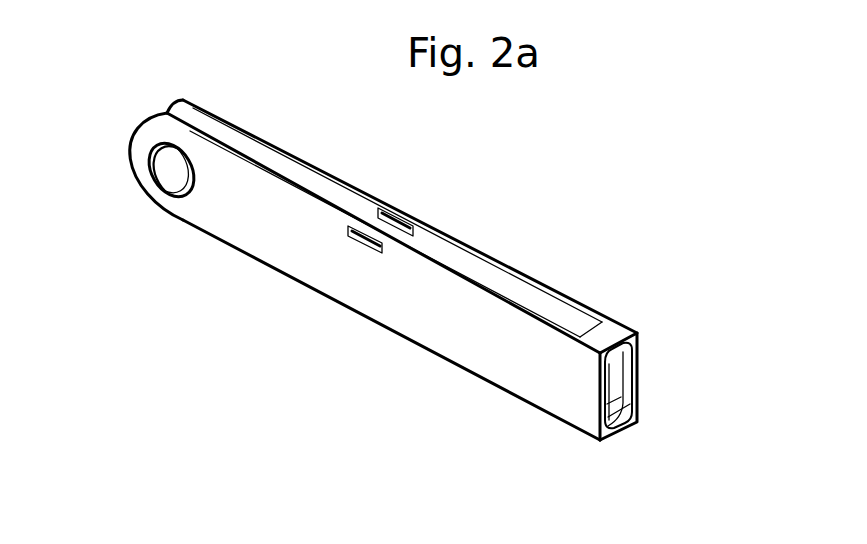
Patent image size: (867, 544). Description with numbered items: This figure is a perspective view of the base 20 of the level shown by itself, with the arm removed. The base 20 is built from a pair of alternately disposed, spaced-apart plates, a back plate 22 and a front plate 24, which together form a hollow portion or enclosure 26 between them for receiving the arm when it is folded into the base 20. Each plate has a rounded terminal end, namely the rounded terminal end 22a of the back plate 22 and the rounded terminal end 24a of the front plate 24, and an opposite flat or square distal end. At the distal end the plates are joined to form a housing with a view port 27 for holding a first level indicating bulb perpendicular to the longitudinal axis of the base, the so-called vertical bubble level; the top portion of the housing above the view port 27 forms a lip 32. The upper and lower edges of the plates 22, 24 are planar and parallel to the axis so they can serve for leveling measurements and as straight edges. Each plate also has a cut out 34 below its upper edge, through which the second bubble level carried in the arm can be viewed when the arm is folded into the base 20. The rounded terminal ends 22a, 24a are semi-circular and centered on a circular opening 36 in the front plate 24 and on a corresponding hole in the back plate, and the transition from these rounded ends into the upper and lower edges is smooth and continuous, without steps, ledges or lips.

The base 20 is at (245, 220).
The back plate 22 is at (500, 256).
The rounded terminal end 22a is at (182, 98).
The front plate 24 is at (455, 325).
The rounded terminal end 24a is at (135, 173).
The hollow portion 26 is at (565, 318).
The view port 27 is at (612, 392).
The lip 32 is at (640, 350).
The cut out 34 is at (352, 242).
The circular opening 36 is at (163, 182).